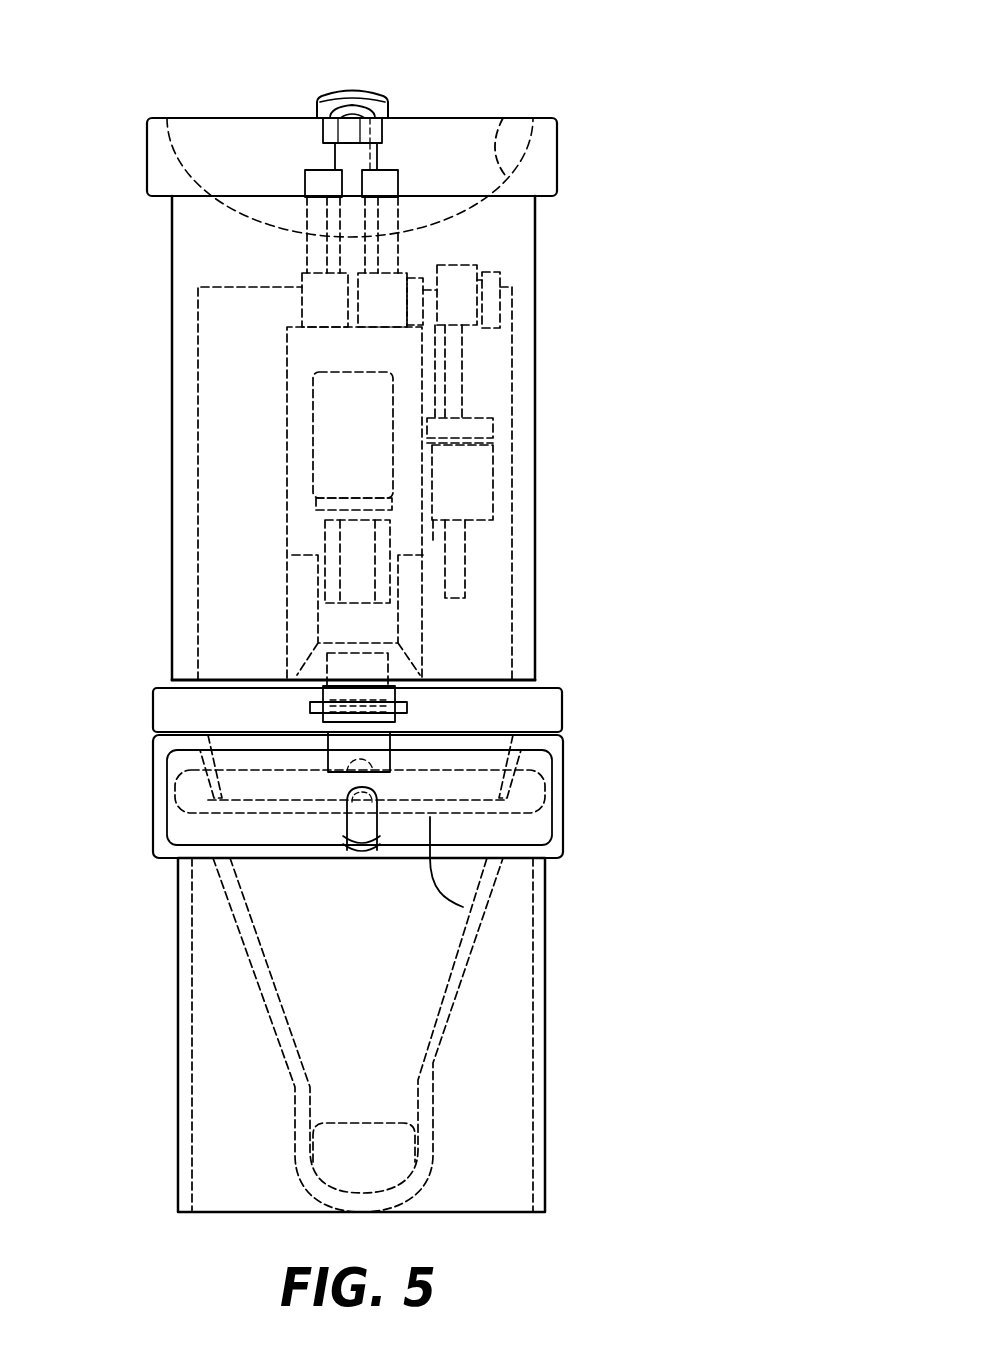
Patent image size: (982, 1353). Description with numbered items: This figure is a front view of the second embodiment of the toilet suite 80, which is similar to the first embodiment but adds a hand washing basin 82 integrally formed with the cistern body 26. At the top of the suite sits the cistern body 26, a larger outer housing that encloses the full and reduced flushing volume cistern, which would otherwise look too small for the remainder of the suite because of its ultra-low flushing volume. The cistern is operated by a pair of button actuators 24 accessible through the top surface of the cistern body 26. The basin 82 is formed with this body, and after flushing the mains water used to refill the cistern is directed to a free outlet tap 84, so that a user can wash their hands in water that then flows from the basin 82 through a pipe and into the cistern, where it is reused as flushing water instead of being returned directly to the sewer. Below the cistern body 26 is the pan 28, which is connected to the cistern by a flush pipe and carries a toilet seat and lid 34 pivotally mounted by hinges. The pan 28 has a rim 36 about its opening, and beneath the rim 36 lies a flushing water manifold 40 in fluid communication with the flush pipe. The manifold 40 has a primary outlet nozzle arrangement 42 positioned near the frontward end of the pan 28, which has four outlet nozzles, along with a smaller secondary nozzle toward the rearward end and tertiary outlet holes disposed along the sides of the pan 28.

The button actuators 24 is at (360, 76).
The cistern body 26 is at (535, 263).
The pan 28 is at (556, 1005).
The lid 34 is at (560, 688).
The rim 36 is at (565, 755).
The flushing water manifold 40 is at (463, 907).
The primary outlet nozzle arrangement 42 is at (330, 820).
The toilet suite 80 is at (630, 425).
The hand washing basin 82 is at (503, 118).
The free outlet tap 84 is at (365, 90).